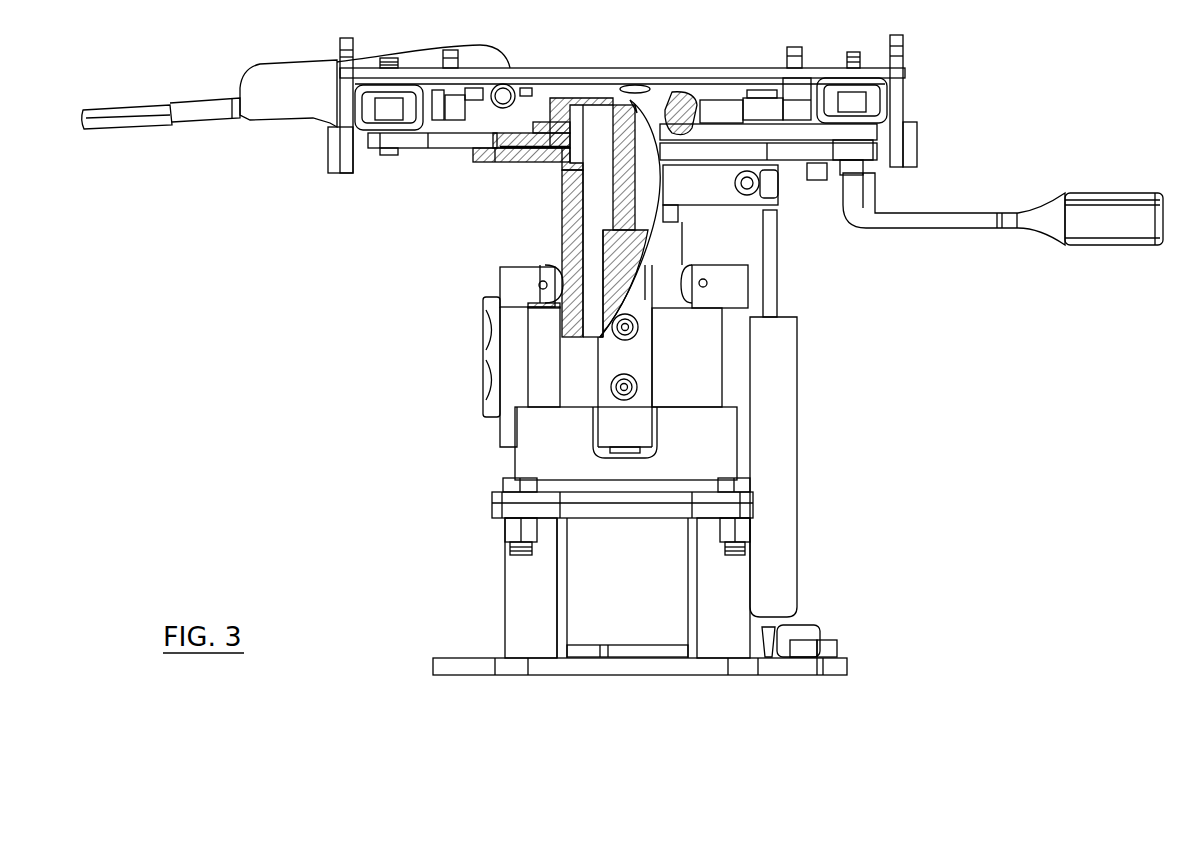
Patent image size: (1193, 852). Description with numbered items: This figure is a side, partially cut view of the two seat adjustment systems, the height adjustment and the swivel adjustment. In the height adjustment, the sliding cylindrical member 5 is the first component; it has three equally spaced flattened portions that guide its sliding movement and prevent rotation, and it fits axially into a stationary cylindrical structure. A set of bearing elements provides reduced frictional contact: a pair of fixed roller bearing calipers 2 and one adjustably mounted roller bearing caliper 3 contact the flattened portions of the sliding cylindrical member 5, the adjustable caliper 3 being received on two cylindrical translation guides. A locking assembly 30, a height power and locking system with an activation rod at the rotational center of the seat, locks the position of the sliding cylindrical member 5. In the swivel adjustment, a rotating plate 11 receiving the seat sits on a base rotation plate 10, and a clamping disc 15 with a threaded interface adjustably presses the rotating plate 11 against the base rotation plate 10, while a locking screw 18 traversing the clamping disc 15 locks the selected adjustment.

The fixed roller bearing calipers 2 is at (735, 289).
The adjustably mounted roller bearing caliper 3 is at (513, 273).
The sliding cylindrical member 5 is at (562, 210).
The base rotation plate 10 is at (490, 158).
The rotating plate 11 is at (447, 142).
The clamping disc 15 is at (563, 98).
The locking screw 18 is at (682, 92).
The locking assembly 30 is at (620, 241).